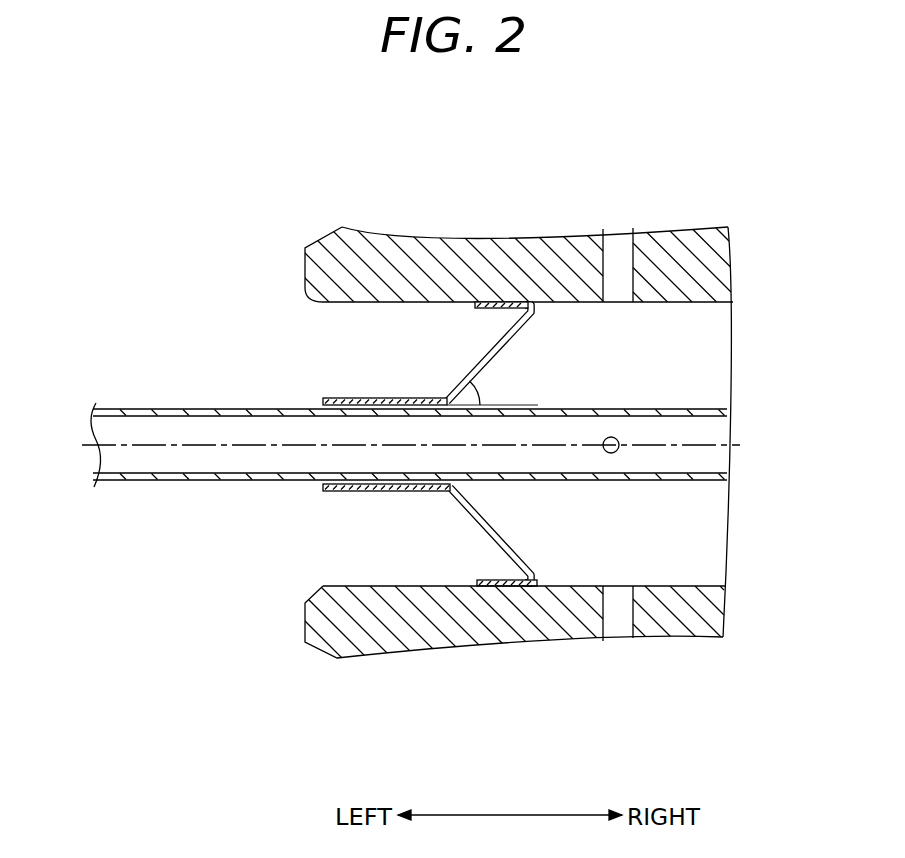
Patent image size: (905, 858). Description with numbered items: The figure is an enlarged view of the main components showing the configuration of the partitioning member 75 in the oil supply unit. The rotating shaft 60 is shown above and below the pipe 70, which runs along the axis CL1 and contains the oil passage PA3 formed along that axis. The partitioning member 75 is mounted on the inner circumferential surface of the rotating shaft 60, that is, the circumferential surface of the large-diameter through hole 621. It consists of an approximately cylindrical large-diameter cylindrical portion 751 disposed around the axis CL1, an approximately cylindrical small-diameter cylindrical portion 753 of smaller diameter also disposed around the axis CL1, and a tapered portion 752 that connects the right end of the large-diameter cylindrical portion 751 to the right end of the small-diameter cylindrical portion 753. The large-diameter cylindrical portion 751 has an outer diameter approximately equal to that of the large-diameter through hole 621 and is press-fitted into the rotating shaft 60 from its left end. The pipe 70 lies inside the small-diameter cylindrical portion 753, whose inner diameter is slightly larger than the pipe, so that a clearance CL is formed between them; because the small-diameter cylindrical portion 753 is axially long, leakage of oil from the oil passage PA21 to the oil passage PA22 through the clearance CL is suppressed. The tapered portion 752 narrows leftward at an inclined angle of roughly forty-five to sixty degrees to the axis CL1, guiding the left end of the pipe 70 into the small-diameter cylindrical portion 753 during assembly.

The rotating shaft 60 is at (393, 257).
The pipe 70 is at (141, 408).
The partitioning member 75 is at (389, 387).
The large-diameter cylindrical portion 751 is at (498, 302).
The tapered portion 752 is at (485, 358).
The small-diameter cylindrical portion 753 is at (372, 397).
The large-diameter through hole 621 is at (351, 588).
The oil passage PA3 is at (262, 425).
The oil passage PA21 is at (545, 565).
The oil passage PA22 is at (427, 573).
The clearance CL is at (373, 485).
The axis CL1 is at (436, 448).